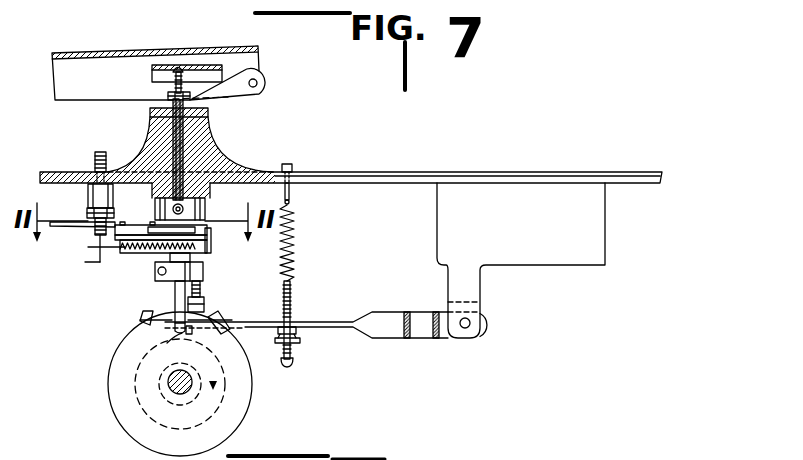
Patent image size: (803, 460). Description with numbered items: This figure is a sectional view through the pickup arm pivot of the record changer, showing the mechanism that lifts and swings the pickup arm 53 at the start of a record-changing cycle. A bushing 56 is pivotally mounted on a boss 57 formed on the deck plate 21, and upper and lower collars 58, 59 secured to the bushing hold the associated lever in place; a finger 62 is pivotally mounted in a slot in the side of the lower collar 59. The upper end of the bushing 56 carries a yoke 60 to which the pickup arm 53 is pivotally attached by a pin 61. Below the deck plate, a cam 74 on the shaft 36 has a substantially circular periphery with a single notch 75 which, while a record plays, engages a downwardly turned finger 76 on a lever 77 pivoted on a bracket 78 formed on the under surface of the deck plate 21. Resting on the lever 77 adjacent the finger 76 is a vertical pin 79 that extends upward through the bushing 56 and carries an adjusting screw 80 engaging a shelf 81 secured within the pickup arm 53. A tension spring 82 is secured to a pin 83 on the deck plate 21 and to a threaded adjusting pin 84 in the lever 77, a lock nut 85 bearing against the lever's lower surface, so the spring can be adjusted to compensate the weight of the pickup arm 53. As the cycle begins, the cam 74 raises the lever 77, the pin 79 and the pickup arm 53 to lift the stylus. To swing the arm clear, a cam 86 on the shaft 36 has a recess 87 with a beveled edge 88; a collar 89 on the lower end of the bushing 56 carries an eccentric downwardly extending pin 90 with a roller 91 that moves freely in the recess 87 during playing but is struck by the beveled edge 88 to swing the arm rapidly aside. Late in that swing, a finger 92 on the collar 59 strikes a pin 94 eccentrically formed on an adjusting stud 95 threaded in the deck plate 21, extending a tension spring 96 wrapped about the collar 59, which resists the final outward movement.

The deck plate 21 is at (333, 175).
The shaft 36 is at (187, 394).
The pickup arm 53 is at (88, 66).
The bushing 56 is at (200, 147).
The boss 57 is at (236, 157).
The upper collar 58 is at (205, 206).
The lower collar 59 is at (211, 234).
The yoke 60 is at (236, 98).
The pin 61 is at (258, 83).
The finger 62 is at (131, 236).
The cam 74 is at (143, 390).
The notch 75 is at (177, 340).
The finger 76 is at (188, 332).
The lever 77 is at (331, 322).
The bracket 78 is at (452, 280).
The vertical pin 79 is at (175, 288).
The adjusting screw 80 is at (157, 80).
The shelf 81 is at (193, 65).
The tension spring 82 is at (291, 241).
The pin 83 is at (291, 189).
The threaded adjusting pin 84 is at (291, 312).
The lock nut 85 is at (297, 337).
The cam 86 is at (137, 428).
The recess 87 is at (162, 320).
The beveled edge 88 is at (143, 316).
The collar 89 is at (203, 268).
The pin 90 is at (201, 292).
The roller 91 is at (205, 308).
The finger 92 is at (109, 247).
The pin 94 is at (97, 256).
The adjusting stud 95 is at (95, 160).
The tension spring 96 is at (140, 250).